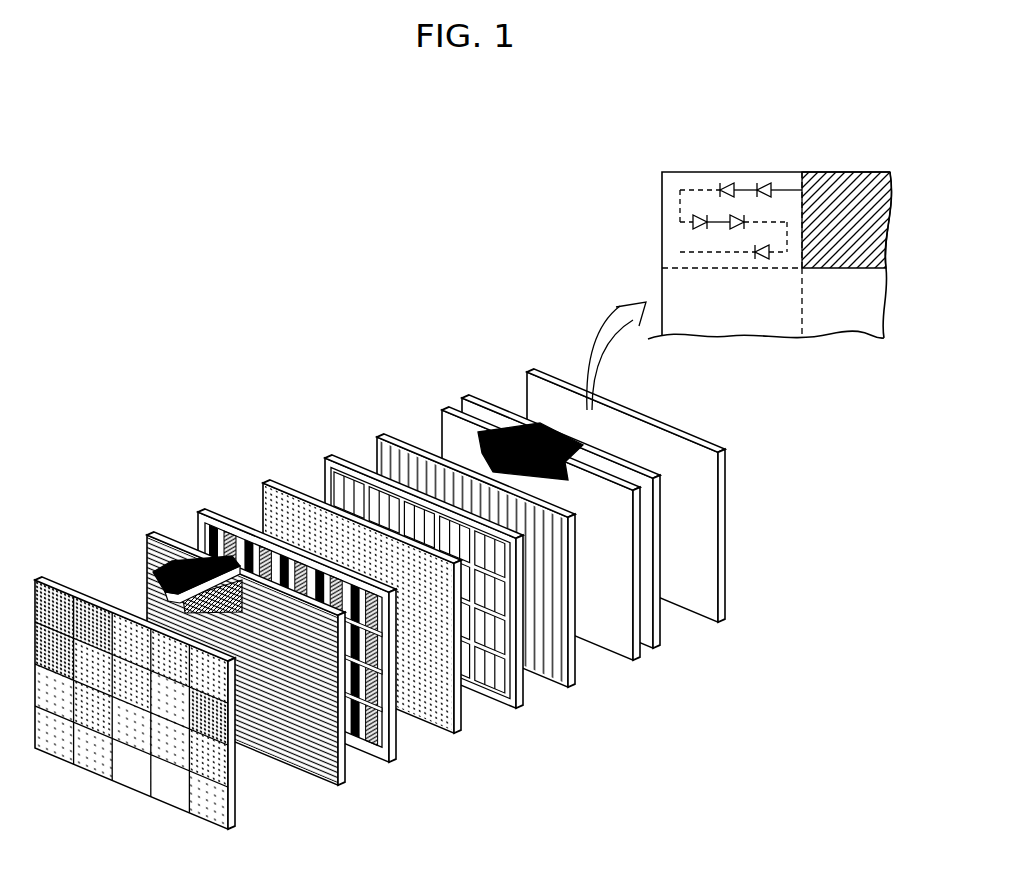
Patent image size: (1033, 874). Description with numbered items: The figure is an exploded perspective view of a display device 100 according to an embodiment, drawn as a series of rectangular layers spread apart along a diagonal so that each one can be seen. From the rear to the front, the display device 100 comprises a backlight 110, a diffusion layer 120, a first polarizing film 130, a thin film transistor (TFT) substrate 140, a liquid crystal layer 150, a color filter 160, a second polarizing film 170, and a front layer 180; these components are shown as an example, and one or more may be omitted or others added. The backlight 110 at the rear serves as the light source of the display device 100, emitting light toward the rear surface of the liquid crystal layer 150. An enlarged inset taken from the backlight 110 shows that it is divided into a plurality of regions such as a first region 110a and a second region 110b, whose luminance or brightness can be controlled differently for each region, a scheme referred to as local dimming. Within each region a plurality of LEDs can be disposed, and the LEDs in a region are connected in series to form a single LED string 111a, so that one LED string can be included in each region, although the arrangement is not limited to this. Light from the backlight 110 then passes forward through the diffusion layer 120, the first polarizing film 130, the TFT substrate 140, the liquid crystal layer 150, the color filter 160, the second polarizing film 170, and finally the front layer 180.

The display device 100 is at (238, 368).
The backlight 110 is at (533, 368).
The region of the backlight 110a is at (690, 176).
The region of the backlight 110b is at (818, 186).
The LED string 111a is at (757, 178).
The diffusion layer 120 is at (445, 403).
The first polarizing film 130 is at (378, 435).
The thin film transistor (TFT) substrate 140 is at (328, 457).
The liquid crystal layer 150 is at (268, 481).
The color filter 160 is at (203, 511).
The second polarizing film 170 is at (150, 534).
The front layer 180 is at (38, 580).